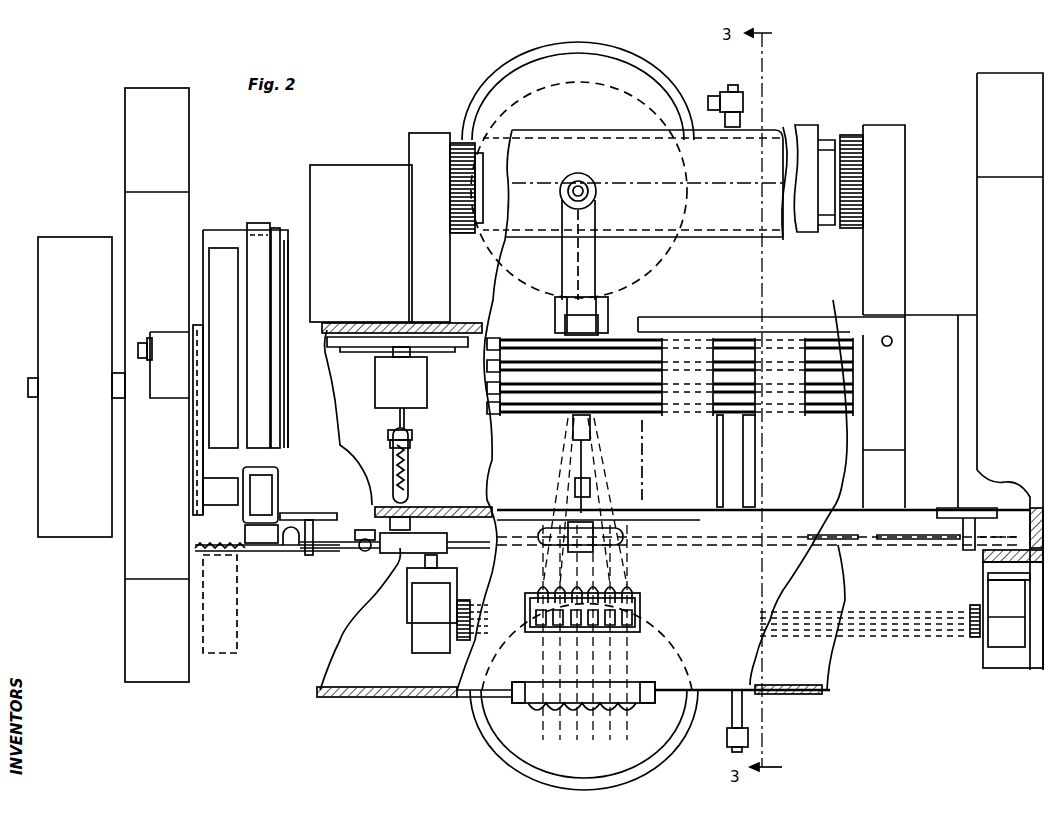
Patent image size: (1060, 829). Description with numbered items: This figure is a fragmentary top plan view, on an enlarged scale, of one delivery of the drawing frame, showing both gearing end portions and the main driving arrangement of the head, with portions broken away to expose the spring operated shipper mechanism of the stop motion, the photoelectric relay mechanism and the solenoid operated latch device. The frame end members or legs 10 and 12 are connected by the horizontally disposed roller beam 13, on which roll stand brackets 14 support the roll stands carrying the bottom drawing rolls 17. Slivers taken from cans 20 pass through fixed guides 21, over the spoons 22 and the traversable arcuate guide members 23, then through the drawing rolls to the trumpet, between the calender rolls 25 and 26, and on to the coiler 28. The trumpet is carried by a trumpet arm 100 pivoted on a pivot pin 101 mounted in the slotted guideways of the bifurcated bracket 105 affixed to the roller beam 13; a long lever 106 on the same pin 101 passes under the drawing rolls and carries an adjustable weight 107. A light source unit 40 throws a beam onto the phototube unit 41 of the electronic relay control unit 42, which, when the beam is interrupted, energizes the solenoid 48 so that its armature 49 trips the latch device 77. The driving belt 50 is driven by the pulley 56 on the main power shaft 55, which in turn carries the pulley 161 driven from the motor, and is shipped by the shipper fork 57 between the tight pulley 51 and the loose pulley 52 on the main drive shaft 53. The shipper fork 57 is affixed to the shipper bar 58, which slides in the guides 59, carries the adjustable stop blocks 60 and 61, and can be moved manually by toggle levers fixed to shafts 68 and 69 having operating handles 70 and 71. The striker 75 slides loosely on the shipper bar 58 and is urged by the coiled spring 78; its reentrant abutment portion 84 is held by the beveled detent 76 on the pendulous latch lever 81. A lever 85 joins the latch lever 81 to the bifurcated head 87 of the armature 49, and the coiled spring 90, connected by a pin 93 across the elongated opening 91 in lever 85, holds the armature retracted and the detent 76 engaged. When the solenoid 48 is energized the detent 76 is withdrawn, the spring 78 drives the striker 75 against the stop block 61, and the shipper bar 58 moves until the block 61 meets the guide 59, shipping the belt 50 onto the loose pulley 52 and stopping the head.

The frame end member 10 is at (137, 637).
The frame end member 12 is at (977, 85).
The roller beam 13 is at (437, 506).
The roll stand bracket 14 is at (756, 465).
The bottom drawing roll 17 is at (680, 338).
The can 20 is at (492, 738).
The fixed guide 21 is at (510, 695).
The spoon 22 is at (560, 588).
The traversable arcuate guide member 23 is at (622, 533).
The calender roll 25 is at (480, 232).
The calender roll 26 is at (822, 150).
The coiler 28 is at (632, 90).
The light source unit 40 is at (1010, 648).
The phototube unit 41 is at (420, 640).
The electronic relay control unit 42 is at (237, 637).
The solenoid 48 is at (428, 368).
The armature 49 is at (405, 418).
The driving belt 50 is at (257, 224).
The tight pulley 51 is at (283, 262).
The loose pulley 52 is at (222, 252).
The main drive shaft 53 is at (141, 343).
The main power shaft 55 is at (33, 378).
The pulley 56 is at (282, 232).
The shipper fork 57 is at (260, 544).
The shipper bar 58 is at (888, 542).
The guide 59 is at (309, 556).
The stop block 60 is at (290, 548).
The stop block 61 is at (358, 545).
The shaft 68 is at (732, 718).
The shaft 69 is at (735, 90).
The operating handle 70 is at (727, 740).
The operating handle 71 is at (712, 98).
The striker 75 is at (380, 548).
The detent 76 is at (415, 536).
The latch device 77 is at (410, 460).
The coiled spring 78 is at (232, 549).
The latch lever 81 is at (390, 522).
The abutment portion 84 is at (428, 560).
The lever 85 is at (394, 458).
The bifurcated head 87 is at (412, 434).
The coiled spring 90 is at (394, 478).
The elongated opening 91 is at (392, 436).
The pin 93 is at (412, 444).
The trumpet arm 100 is at (563, 258).
The pivot pin 101 is at (605, 308).
The bifurcated bracket 105 is at (555, 318).
The long lever 106 is at (596, 300).
The adjustable weight 107 is at (573, 432).
The pulley 161 is at (95, 530).